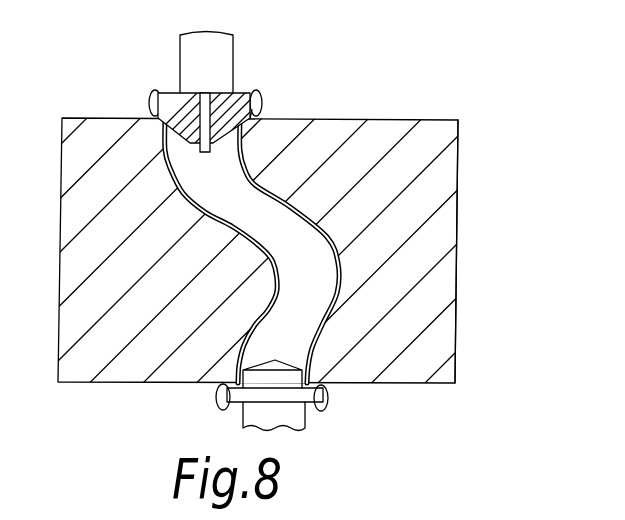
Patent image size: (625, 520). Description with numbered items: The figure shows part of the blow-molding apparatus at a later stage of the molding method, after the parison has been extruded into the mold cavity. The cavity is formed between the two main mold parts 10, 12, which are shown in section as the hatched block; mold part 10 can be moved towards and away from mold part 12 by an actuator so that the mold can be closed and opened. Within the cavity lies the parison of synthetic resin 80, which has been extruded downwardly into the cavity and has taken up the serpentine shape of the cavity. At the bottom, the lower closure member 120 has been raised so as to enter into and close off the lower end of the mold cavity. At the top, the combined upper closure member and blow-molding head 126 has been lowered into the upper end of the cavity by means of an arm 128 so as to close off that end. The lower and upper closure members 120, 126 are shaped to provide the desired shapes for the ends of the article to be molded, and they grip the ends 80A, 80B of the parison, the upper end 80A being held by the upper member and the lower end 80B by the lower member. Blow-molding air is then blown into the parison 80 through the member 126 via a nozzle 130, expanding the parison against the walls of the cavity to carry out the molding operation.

The mold part 10 is at (95, 142).
The mold part 12 is at (432, 148).
The parison of synthetic resin 80 is at (250, 160).
The end of the parison 80A is at (263, 97).
The end of the parison 80B is at (217, 408).
The lower closure member 120 is at (317, 410).
The combined upper closure member and blow-molding head 126 is at (243, 95).
The arm 128 is at (215, 53).
The nozzle 130 is at (165, 88).